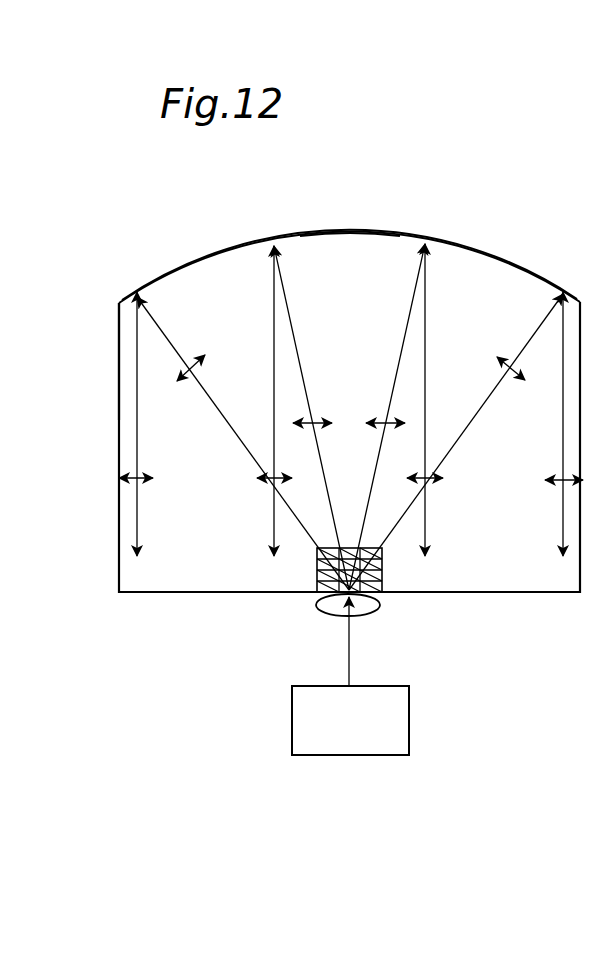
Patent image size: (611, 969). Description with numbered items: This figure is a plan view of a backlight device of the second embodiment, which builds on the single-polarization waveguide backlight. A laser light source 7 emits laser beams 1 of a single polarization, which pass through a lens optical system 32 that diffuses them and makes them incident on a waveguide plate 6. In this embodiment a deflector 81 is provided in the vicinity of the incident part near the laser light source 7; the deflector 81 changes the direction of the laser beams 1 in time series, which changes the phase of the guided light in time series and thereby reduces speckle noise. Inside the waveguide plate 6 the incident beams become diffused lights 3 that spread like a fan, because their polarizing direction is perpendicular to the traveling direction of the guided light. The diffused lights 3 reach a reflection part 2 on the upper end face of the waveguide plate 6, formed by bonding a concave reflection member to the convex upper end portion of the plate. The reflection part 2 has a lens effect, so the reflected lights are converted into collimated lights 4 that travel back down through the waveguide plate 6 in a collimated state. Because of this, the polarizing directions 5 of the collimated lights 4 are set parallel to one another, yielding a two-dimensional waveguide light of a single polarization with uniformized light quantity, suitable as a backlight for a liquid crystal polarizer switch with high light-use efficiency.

The laser beams 1 is at (349, 664).
The reflection part 2 is at (412, 234).
The diffused lights 3 is at (147, 319).
The collimated lights 4 is at (119, 366).
The polarizing directions 5 is at (119, 470).
The waveguide plate 6 is at (537, 594).
The laser light source 7 is at (410, 714).
The lens optical system 32 is at (380, 604).
The deflector 81 is at (317, 577).